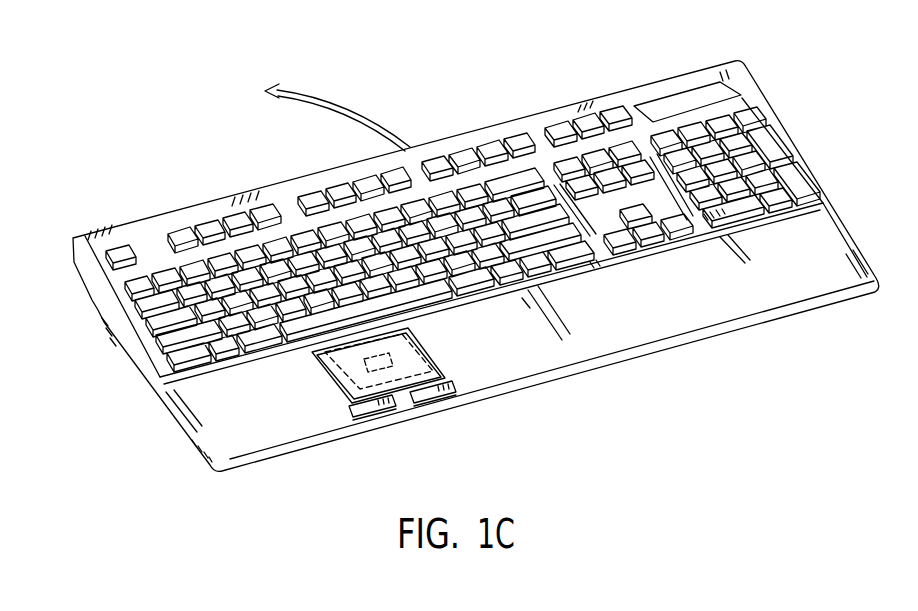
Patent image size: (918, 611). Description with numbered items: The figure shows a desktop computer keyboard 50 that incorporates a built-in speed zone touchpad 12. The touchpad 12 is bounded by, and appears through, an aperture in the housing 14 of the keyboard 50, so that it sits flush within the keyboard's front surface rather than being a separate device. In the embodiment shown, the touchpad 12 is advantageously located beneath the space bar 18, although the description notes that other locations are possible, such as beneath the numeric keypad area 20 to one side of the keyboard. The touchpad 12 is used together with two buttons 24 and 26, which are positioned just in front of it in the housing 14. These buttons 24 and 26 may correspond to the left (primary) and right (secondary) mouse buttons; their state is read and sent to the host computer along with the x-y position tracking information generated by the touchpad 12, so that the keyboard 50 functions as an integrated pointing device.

The computer keyboard 50 is at (95, 370).
The speed zone touchpad 12 is at (340, 378).
The housing 14 is at (521, 358).
The space bar 18 is at (398, 291).
The numeric keypad area 20 is at (731, 138).
The button 24 is at (371, 417).
The button 26 is at (450, 393).